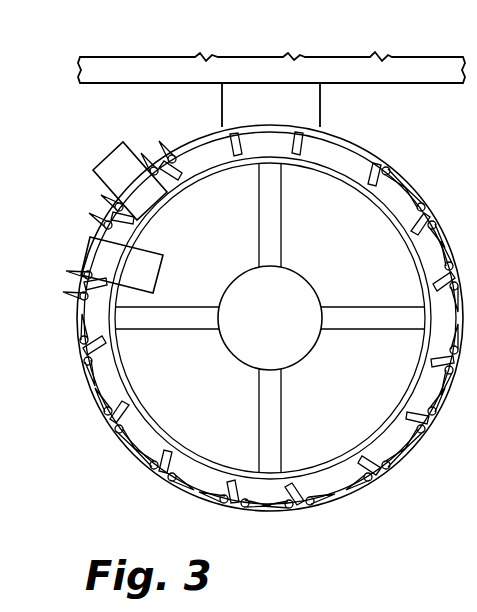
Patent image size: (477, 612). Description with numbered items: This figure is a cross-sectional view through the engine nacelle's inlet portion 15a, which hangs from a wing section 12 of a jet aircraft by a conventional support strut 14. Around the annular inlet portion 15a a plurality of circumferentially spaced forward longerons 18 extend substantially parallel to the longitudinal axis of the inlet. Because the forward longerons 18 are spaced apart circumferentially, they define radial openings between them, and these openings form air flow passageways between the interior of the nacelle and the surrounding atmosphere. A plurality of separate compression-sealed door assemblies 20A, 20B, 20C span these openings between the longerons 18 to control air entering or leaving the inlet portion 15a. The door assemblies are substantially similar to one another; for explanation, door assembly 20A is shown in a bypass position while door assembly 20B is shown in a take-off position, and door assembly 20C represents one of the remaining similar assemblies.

The wing section 12 is at (392, 62).
The support strut 14 is at (320, 110).
The inlet portion 15a is at (372, 152).
The forward longerons 18 is at (232, 152).
The compression-sealed door assembly 20A is at (122, 144).
The compression-sealed door assembly 20B is at (103, 247).
The compression-sealed door assembly 20C is at (89, 390).